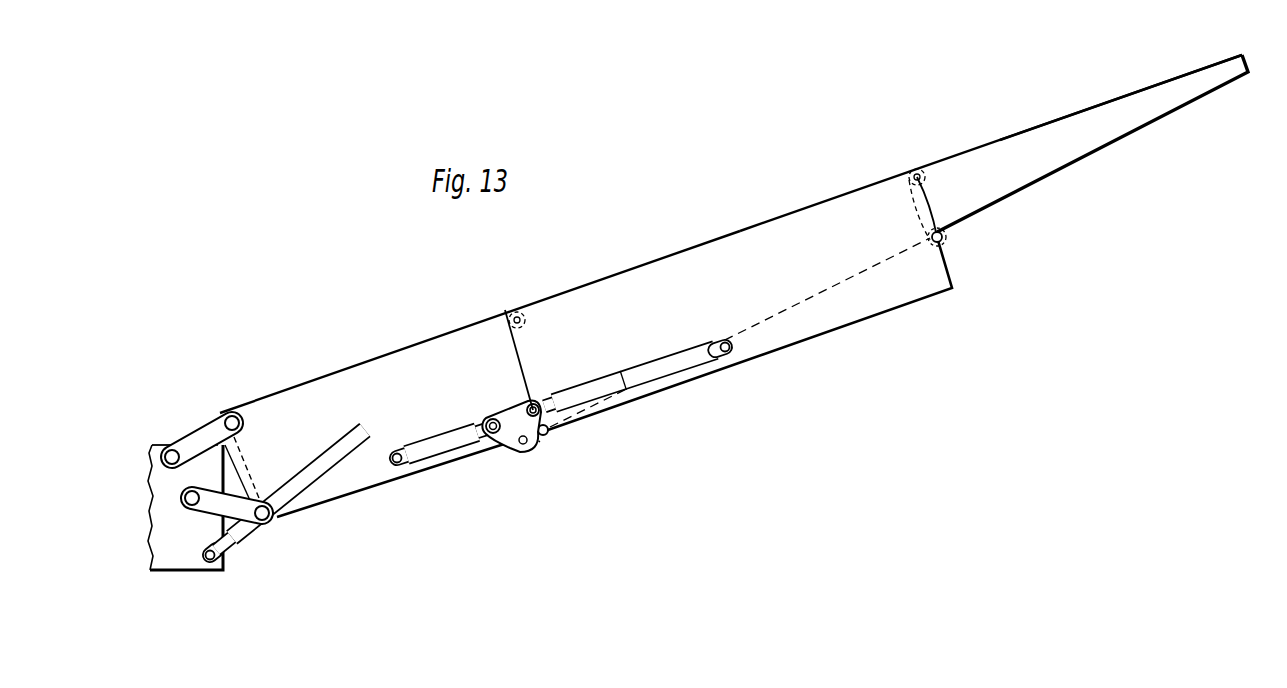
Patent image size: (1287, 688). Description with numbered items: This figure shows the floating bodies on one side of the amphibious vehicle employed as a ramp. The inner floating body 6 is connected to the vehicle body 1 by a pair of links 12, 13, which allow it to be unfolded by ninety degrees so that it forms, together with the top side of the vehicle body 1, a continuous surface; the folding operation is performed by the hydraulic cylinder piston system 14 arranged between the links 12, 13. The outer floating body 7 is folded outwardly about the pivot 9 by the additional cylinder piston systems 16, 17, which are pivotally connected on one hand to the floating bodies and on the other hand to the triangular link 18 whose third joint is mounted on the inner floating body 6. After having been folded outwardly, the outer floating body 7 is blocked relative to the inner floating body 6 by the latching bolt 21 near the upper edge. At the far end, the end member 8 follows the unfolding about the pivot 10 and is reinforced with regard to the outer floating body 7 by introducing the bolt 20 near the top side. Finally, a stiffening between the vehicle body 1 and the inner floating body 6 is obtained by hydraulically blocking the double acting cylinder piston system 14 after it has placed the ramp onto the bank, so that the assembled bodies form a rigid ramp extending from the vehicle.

The vehicle body 1 is at (152, 445).
The inner floating body 6 is at (372, 366).
The outer floating body 7 is at (668, 270).
The end member 8 is at (1053, 128).
The pivot 9 is at (544, 438).
The pivot 10 is at (945, 242).
The link 12 is at (198, 428).
The link 13 is at (208, 508).
The hydraulic cylinder piston system 14 is at (318, 466).
The hydraulic cylinder piston system 16 is at (428, 442).
The hydraulic cylinder piston system 17 is at (598, 387).
The triangular link 18 is at (508, 420).
The bolt 20 is at (917, 170).
The latching bolt 21 is at (513, 310).